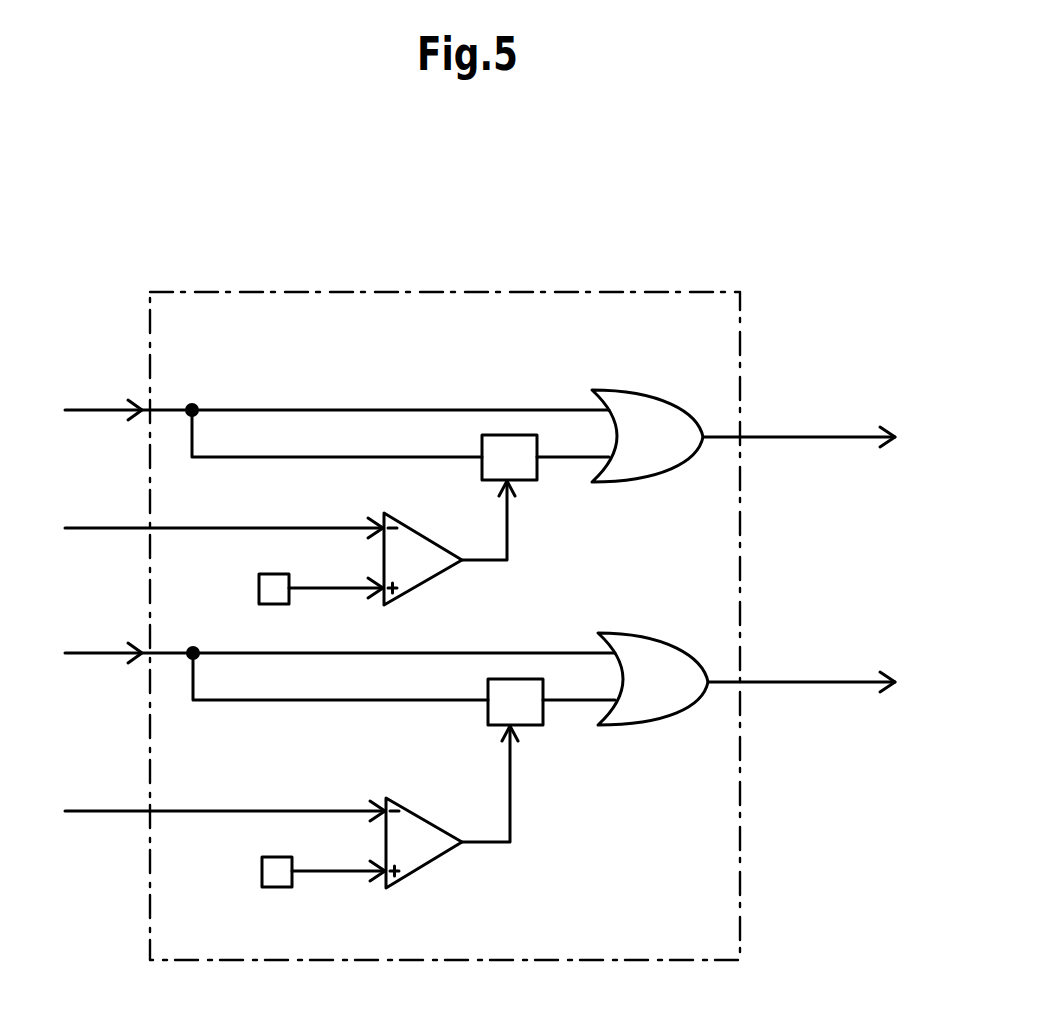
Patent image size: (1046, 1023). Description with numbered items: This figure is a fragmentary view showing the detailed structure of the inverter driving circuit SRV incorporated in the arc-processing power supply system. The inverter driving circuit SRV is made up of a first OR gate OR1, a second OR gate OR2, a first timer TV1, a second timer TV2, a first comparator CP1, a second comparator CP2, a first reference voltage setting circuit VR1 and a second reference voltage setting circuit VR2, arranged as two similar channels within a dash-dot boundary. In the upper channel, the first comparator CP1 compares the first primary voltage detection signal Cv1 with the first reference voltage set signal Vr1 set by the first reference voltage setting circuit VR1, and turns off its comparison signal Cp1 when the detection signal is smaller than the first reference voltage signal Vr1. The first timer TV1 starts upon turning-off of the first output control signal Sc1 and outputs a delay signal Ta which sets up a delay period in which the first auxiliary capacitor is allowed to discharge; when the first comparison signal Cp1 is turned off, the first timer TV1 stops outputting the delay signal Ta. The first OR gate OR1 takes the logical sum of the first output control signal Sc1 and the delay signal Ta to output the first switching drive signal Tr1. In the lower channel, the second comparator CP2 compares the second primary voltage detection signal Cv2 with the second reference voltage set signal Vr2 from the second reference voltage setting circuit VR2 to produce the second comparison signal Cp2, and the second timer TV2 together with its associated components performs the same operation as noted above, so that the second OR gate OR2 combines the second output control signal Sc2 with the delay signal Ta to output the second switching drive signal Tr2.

The inverter driving circuit SRV is at (445, 585).
The first output control signal Sc1 is at (336, 418).
The second output control signal Sc2 is at (340, 660).
The first primary voltage detection signal Cv1 is at (224, 518).
The second primary voltage detection signal Cv2 is at (225, 801).
The first reference voltage setting circuit VR1 is at (244, 589).
The second reference voltage setting circuit VR2 is at (247, 872).
The first reference voltage set signal Vr1 is at (336, 579).
The second reference voltage set signal Vr2 is at (338, 861).
The first comparator CP1 is at (409, 545).
The second comparator CP2 is at (409, 828).
The first comparison signal Cp1 is at (483, 520).
The second comparison signal Cp2 is at (485, 784).
The first timer TV1 is at (486, 466).
The second timer TV2 is at (489, 712).
The delay signal Ta is at (576, 594).
The first OR gate OR1 is at (647, 418).
The second OR gate OR2 is at (653, 662).
The first switching drive signal Tr1 is at (820, 434).
The second switching drive signal Tr2 is at (823, 683).